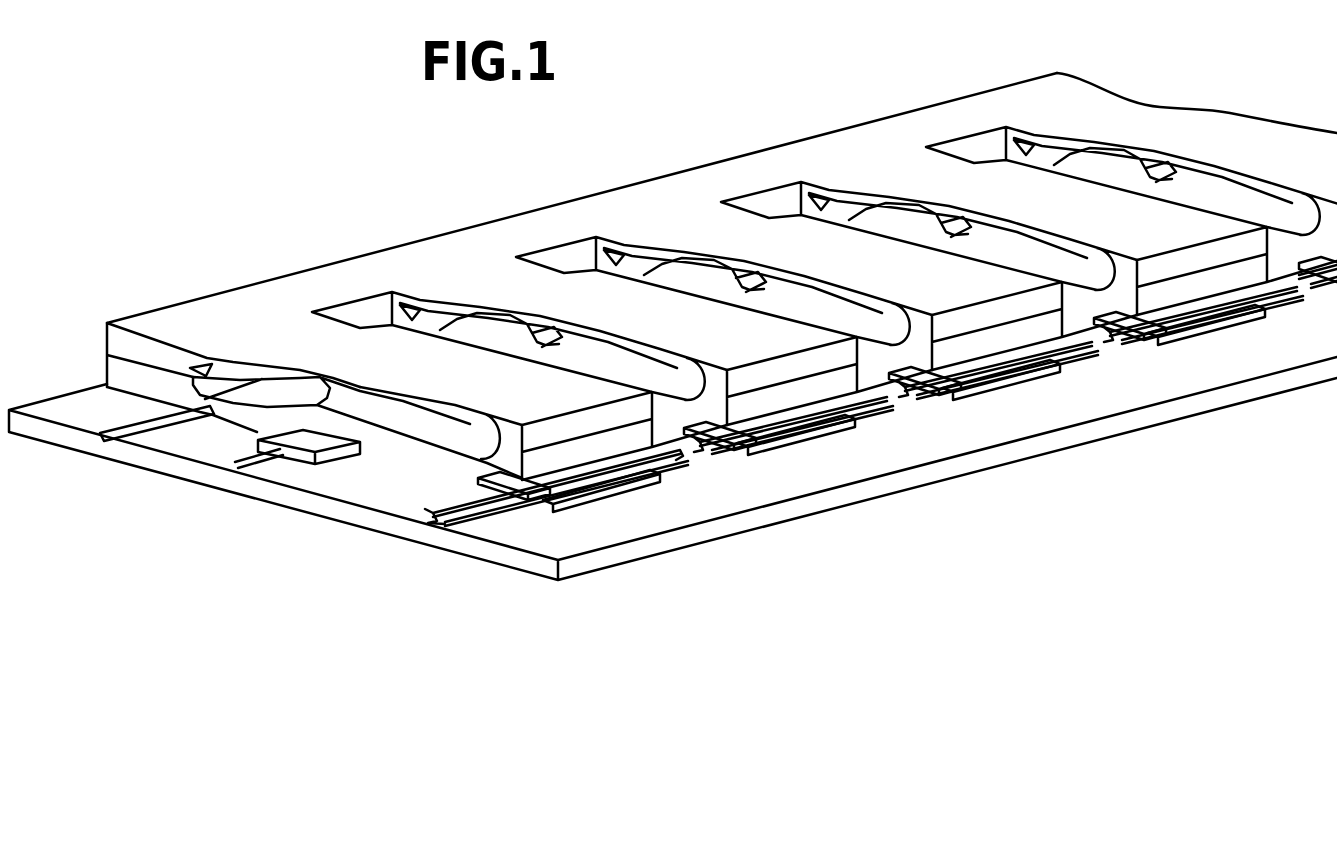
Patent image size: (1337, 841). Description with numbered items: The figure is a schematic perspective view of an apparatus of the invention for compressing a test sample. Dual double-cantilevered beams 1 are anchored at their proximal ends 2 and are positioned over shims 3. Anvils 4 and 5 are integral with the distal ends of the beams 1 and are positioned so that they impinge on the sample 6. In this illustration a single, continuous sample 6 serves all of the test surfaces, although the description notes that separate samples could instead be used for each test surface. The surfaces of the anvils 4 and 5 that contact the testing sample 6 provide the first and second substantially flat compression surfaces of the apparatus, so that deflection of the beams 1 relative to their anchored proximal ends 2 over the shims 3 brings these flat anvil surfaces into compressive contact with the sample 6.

The dual double-cantilevered beams 1 is at (1068, 123).
The proximal ends 2 is at (1003, 84).
The shims 3 is at (302, 468).
The anvil 4 is at (667, 457).
The anvil 5 is at (607, 487).
The sample 6 is at (500, 482).